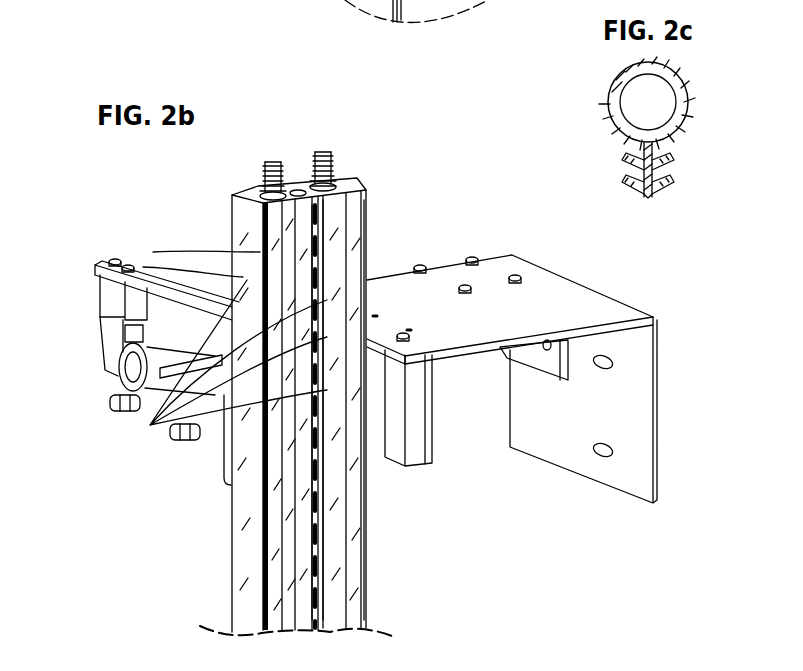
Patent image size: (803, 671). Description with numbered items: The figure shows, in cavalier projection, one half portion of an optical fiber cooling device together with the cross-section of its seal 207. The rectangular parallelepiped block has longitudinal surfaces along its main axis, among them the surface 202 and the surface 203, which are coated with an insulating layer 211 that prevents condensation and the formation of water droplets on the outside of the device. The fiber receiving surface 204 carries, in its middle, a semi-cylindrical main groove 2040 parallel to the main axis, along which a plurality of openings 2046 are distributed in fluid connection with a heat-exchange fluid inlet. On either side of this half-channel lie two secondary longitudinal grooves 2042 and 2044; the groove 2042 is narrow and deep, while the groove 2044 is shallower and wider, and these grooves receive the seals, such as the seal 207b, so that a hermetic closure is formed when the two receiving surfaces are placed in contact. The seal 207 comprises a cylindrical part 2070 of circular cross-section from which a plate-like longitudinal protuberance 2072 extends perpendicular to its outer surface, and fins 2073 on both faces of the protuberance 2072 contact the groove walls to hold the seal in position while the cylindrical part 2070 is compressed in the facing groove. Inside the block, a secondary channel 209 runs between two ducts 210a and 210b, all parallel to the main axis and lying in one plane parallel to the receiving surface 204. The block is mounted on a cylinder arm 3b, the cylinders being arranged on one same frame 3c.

In FIG. 2b, the longitudinal surface 202 is at (256, 186).
In FIG. 2b, the fiber receiving surface 204 is at (275, 515).
In FIG. 2b, the secondary channel 209 is at (296, 188).
In FIG. 2b, the duct 210a is at (274, 160).
In FIG. 2b, the duct 210b is at (323, 150).
In FIG. 2b, the secondary groove 2042 is at (340, 180).
In FIG. 2b, the insulating layer 211 is at (368, 202).
In FIG. 2b, the main groove 2040 is at (327, 258).
In FIG. 2b, the seal 207b is at (345, 285).
In FIG. 2b, the frame 3c is at (542, 303).
In FIG. 2b, the cylinder arm 3b is at (160, 268).
In FIG. 2b, the longitudinal surface 203 is at (98, 297).
In FIG. 2b, the secondary groove 2044 is at (290, 240).
In FIG. 2b, the openings 2046 is at (150, 425).
In FIG. 2c, the seal 207 is at (651, 120).
In FIG. 2c, the cylindrical part 2070 is at (609, 105).
In FIG. 2c, the longitudinal protuberance 2072 is at (657, 146).
In FIG. 2c, the fins 2073 is at (667, 167).